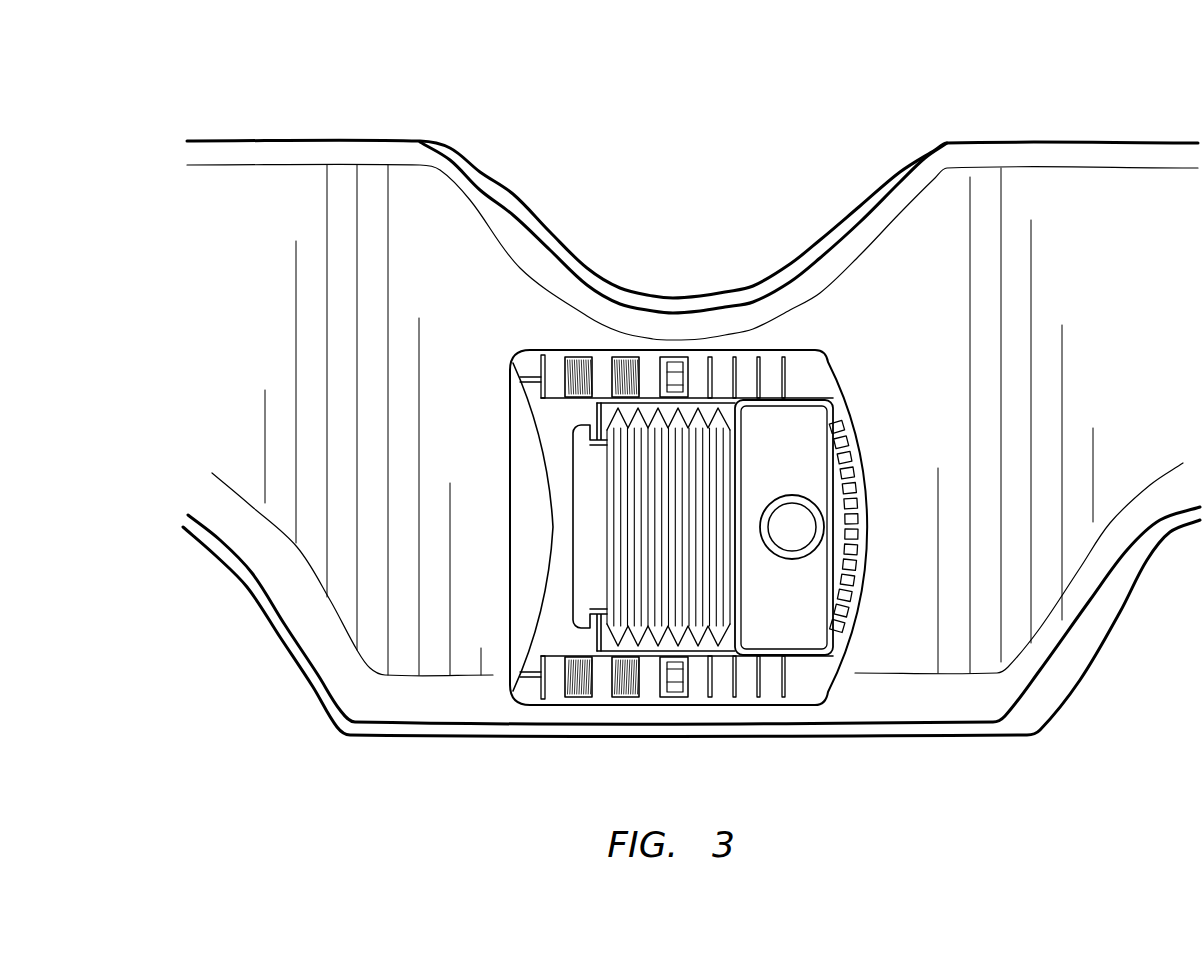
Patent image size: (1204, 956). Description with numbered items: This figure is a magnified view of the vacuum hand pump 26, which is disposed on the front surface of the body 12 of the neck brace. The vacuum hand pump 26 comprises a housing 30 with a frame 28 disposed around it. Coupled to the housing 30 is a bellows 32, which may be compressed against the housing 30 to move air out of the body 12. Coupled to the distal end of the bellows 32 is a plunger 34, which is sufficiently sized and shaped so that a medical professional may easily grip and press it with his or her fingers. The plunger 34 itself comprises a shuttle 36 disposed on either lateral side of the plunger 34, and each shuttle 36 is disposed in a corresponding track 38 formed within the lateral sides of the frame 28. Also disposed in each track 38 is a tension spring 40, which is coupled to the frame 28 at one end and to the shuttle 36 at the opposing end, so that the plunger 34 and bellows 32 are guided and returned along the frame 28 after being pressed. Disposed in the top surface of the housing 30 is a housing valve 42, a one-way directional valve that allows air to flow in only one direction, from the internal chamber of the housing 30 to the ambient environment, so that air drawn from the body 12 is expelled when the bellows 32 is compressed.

The body 12 is at (985, 503).
The vacuum hand pump 26 is at (817, 678).
The frame 28 is at (518, 548).
The housing 30 is at (765, 437).
The bellows 32 is at (705, 450).
The plunger 34 is at (563, 483).
The shuttle 36 is at (578, 352).
The track 38 is at (735, 687).
The tension spring 40 is at (587, 365).
The housing valve 42 is at (796, 513).